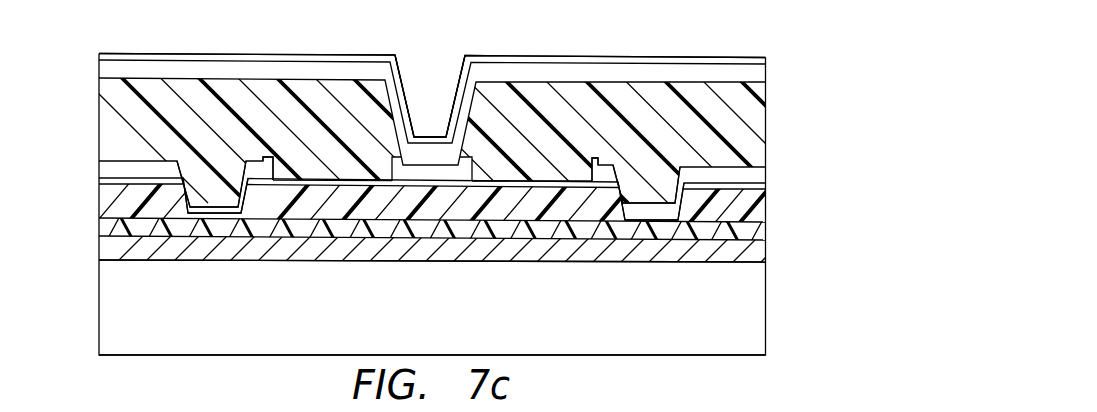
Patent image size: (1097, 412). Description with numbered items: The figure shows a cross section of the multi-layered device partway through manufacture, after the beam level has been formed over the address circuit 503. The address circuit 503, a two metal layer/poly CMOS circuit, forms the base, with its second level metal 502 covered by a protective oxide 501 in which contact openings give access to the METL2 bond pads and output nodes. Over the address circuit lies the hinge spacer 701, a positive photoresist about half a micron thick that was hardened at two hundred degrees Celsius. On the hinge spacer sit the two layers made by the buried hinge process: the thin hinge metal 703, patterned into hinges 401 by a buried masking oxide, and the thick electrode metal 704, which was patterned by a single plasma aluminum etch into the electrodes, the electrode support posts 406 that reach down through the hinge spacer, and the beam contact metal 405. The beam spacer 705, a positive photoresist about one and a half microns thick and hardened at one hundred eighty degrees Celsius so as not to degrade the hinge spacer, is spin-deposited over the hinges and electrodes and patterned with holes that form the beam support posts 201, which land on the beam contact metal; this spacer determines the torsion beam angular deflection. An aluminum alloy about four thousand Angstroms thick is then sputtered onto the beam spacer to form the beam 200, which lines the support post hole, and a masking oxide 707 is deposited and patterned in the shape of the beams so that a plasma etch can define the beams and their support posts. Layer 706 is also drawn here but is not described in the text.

The beam 200 is at (99, 66).
The beam support posts 201 is at (455, 85).
The masking oxide 707 is at (674, 57).
The conductive liner film 706 is at (384, 92).
The beam spacer 705 is at (766, 113).
The electrode metal 704 is at (766, 167).
The hinge metal 703 is at (766, 185).
The hinge spacer 701 is at (766, 207).
The electrode support posts 406 is at (212, 205).
The hinges 401 is at (323, 185).
The beam contact metal 405 is at (470, 172).
The protective oxide 501 is at (766, 231).
The second level metal 502 is at (766, 255).
The address circuit 503 is at (766, 321).